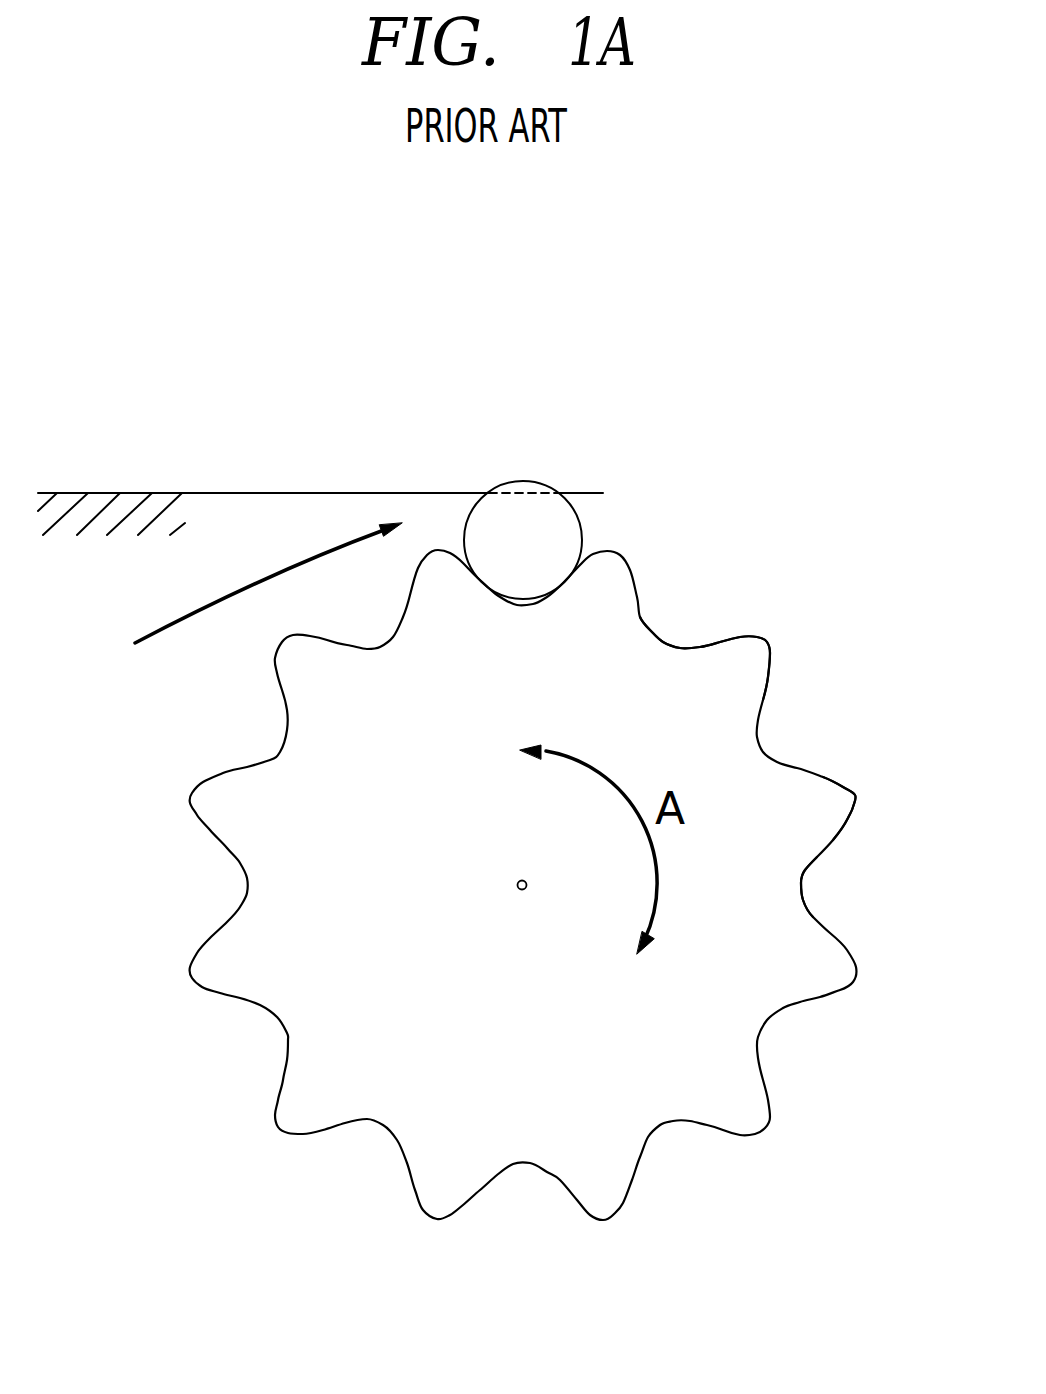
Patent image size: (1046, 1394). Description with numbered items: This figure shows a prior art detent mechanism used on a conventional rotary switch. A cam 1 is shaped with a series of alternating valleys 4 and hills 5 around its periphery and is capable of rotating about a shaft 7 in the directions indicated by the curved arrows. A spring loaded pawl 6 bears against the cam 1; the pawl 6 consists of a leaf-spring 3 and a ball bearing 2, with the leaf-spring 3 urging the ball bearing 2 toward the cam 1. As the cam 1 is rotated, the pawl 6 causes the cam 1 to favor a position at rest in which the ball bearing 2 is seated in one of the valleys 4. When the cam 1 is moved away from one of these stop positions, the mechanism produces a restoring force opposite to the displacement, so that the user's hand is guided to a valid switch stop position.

The cam 1 is at (725, 675).
The ball bearing 2 is at (523, 479).
The leaf-spring 3 is at (305, 492).
The valleys 4 is at (663, 642).
The hills 5 is at (762, 638).
The pawl 6 is at (250, 602).
The shaft 7 is at (517, 886).